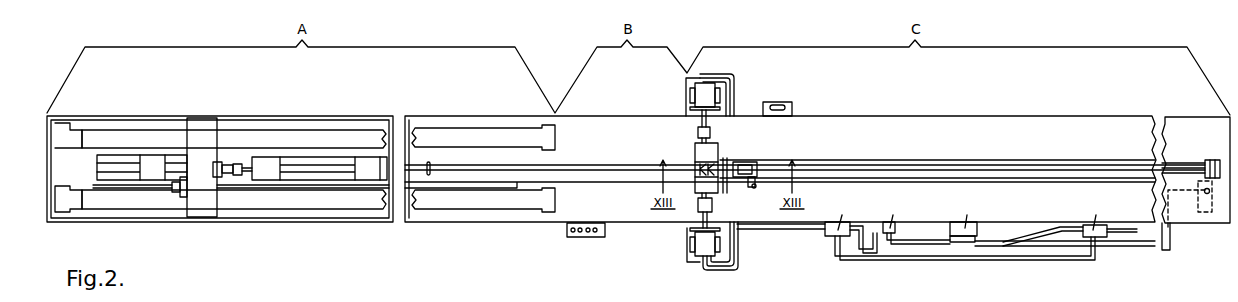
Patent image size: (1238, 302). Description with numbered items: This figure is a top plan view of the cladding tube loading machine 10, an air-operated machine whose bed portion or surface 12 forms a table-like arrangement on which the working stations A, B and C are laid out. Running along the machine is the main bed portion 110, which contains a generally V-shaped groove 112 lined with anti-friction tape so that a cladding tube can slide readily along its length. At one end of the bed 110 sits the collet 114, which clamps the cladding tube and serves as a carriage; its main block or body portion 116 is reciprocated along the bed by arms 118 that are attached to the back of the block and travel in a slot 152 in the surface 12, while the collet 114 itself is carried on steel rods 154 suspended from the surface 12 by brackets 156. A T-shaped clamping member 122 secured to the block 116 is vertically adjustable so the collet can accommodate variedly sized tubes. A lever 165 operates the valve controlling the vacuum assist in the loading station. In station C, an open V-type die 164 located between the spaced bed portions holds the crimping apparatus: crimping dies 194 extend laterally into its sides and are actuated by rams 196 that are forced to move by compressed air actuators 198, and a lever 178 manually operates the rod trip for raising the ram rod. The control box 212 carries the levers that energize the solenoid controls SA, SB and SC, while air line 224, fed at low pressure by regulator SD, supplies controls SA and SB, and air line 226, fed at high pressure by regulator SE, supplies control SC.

The cladding tube loading machine 10 is at (463, 214).
The bed portion or surface 12 is at (354, 214).
The main bed portion 110 is at (584, 172).
The V-shaped groove 112 is at (592, 165).
The collet 114 is at (201, 128).
The main block or body portion 116 is at (203, 208).
The arms 118 is at (174, 192).
The T-shaped clamping member 122 is at (230, 165).
The slot 152 is at (258, 190).
The steel rods 154 is at (93, 138).
The brackets 156 is at (550, 213).
The open V-type die 164 is at (695, 152).
The lever 165 is at (788, 102).
The lever 178 is at (752, 188).
The crimping dies 194 is at (706, 160).
The rams 196 is at (698, 121).
The compressed air actuators 198 is at (703, 93).
The control box 212 is at (587, 238).
The air line 224 is at (760, 231).
The air line 226 is at (1152, 253).